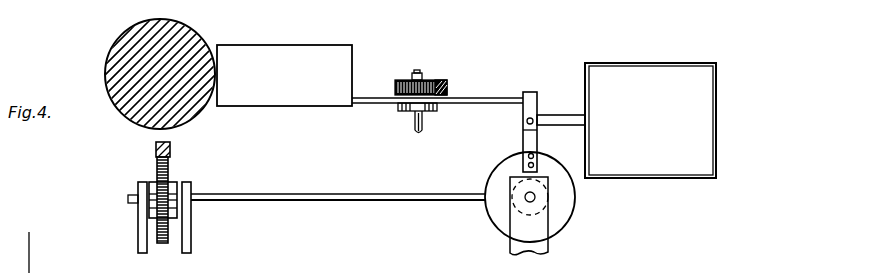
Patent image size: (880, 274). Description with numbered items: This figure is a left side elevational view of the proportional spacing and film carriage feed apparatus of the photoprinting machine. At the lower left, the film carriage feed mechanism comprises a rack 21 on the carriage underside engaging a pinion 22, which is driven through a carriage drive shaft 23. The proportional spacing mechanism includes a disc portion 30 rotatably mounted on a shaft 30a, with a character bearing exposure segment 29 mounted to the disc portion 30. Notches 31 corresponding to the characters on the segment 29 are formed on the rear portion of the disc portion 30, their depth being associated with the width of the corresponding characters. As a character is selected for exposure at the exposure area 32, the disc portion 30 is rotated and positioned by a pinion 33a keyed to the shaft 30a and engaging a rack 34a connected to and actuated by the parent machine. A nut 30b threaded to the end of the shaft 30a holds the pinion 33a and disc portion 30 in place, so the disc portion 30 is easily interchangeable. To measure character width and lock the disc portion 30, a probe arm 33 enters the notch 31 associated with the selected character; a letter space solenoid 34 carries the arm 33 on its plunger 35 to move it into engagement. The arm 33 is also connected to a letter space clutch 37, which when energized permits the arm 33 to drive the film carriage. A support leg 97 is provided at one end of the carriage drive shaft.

The rack 21 is at (171, 149).
The pinion 22 is at (169, 164).
The carriage drive shaft 23 is at (328, 194).
The character bearing exposure segment 29 is at (284, 90).
The disc portion 30 is at (483, 104).
The shaft 30a is at (414, 125).
The nut 30b is at (419, 71).
The notches 31 is at (521, 100).
The exposure area 32 is at (218, 58).
The probe arm 33 is at (522, 137).
The pinion 33a is at (406, 80).
The letter space solenoid 34 is at (654, 121).
The rack 34a is at (445, 83).
The plunger 35 is at (560, 116).
The letter space clutch 37 is at (490, 207).
The support leg 97 is at (547, 242).